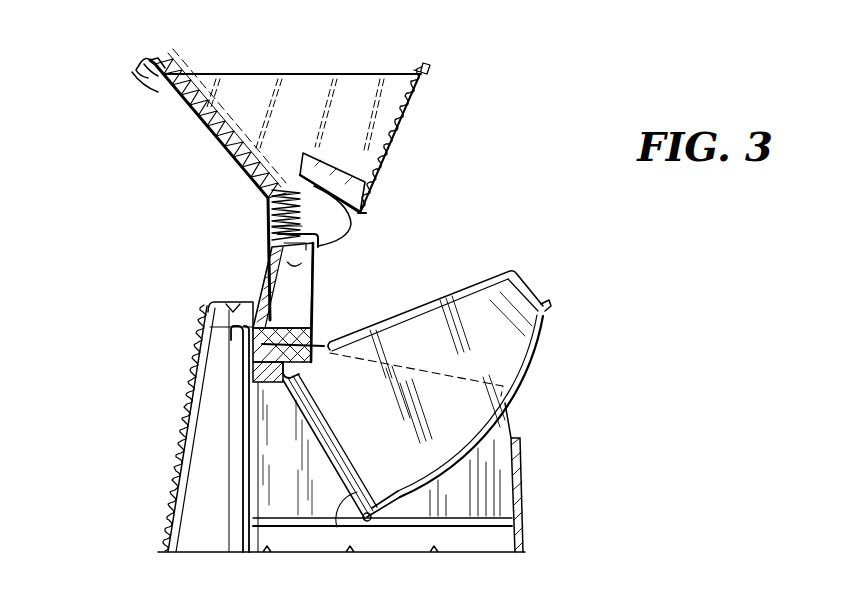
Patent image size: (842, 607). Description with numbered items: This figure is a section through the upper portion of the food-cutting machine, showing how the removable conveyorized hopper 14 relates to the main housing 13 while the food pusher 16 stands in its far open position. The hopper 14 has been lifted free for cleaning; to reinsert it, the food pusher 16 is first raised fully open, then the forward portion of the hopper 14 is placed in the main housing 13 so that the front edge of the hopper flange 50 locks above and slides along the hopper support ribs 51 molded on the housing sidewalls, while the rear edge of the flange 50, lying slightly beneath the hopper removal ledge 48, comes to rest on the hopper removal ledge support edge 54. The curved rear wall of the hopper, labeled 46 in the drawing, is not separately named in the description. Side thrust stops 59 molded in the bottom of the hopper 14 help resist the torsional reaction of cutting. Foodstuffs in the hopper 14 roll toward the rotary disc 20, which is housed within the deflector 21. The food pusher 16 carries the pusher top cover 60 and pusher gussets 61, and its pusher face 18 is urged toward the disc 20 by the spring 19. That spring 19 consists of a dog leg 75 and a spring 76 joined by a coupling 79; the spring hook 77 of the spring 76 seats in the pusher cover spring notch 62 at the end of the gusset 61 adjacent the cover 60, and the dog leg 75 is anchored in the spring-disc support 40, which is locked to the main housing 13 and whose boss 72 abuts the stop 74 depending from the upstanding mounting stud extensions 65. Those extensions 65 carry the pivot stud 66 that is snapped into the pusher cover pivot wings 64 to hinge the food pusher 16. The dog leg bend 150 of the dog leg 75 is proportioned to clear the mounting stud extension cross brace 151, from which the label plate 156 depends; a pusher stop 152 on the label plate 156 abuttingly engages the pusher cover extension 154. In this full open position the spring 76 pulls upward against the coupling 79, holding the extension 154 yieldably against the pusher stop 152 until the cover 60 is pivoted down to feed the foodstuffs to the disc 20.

The main housing 13 is at (538, 447).
The conveyorized hopper 14 is at (444, 295).
The food pusher 16 is at (350, 72).
The food pusher face 18 is at (430, 66).
The spring 19 is at (239, 132).
The rotary disc 20 is at (244, 520).
The deflector 21 is at (188, 434).
The spring-disc support 40 is at (302, 348).
The curved wall 46 is at (530, 364).
The hopper removal ledge 48 is at (546, 300).
The hopper flange 50 is at (350, 506).
The hopper support ribs 51 is at (452, 528).
The hopper removal ledge support edge 54 is at (512, 437).
The side thrust stops 59 is at (369, 519).
The pusher top cover 60 is at (182, 113).
The pusher gusset 61 is at (296, 95).
The pusher cover spring notch 62 is at (160, 66).
The pusher cover pivot wings 64 is at (360, 222).
The upstanding mounting stud extensions 65 is at (263, 280).
The pivot stud 66 is at (343, 230).
The boss 72 is at (296, 366).
The stop 74 is at (256, 328).
The dog leg 75 is at (315, 290).
The spring 76 is at (203, 134).
The spring hook 77 is at (150, 82).
The coupling 79 is at (270, 223).
The dog leg bend 150 is at (326, 238).
The mounting stud extension cross brace 151 is at (270, 247).
The pusher stop 152 is at (267, 257).
The pusher cover extension 154 is at (271, 212).
The label plate 156 is at (256, 297).